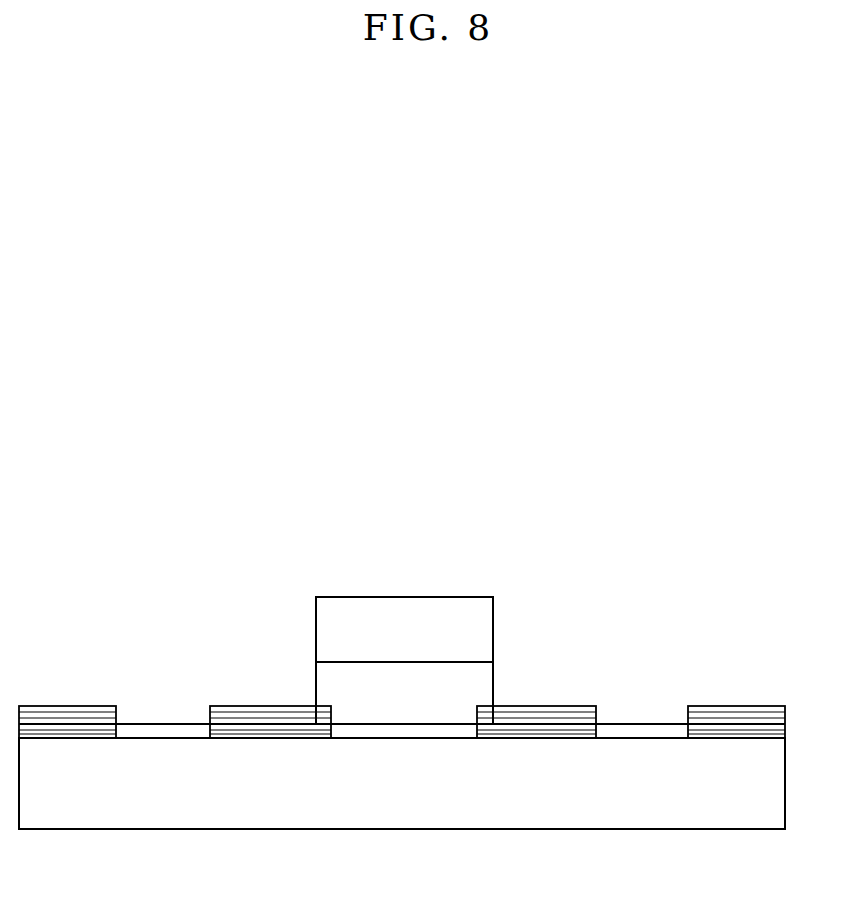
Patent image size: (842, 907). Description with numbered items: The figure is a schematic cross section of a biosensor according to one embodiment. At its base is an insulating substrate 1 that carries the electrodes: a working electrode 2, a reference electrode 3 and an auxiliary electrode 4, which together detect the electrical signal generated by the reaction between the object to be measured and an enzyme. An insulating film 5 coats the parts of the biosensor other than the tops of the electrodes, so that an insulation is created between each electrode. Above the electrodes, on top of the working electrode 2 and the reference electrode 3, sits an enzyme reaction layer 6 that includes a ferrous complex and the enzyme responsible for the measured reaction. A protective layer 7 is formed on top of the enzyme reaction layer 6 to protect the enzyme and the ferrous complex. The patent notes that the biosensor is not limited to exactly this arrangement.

The insulating substrate 1 is at (785, 781).
The working electrode 2 is at (404, 733).
The reference electrode 3 is at (165, 733).
The auxiliary electrode 4 is at (645, 732).
The insulating film 5 is at (785, 722).
The enzyme reaction layer 6 is at (493, 676).
The protective layer 7 is at (493, 628).